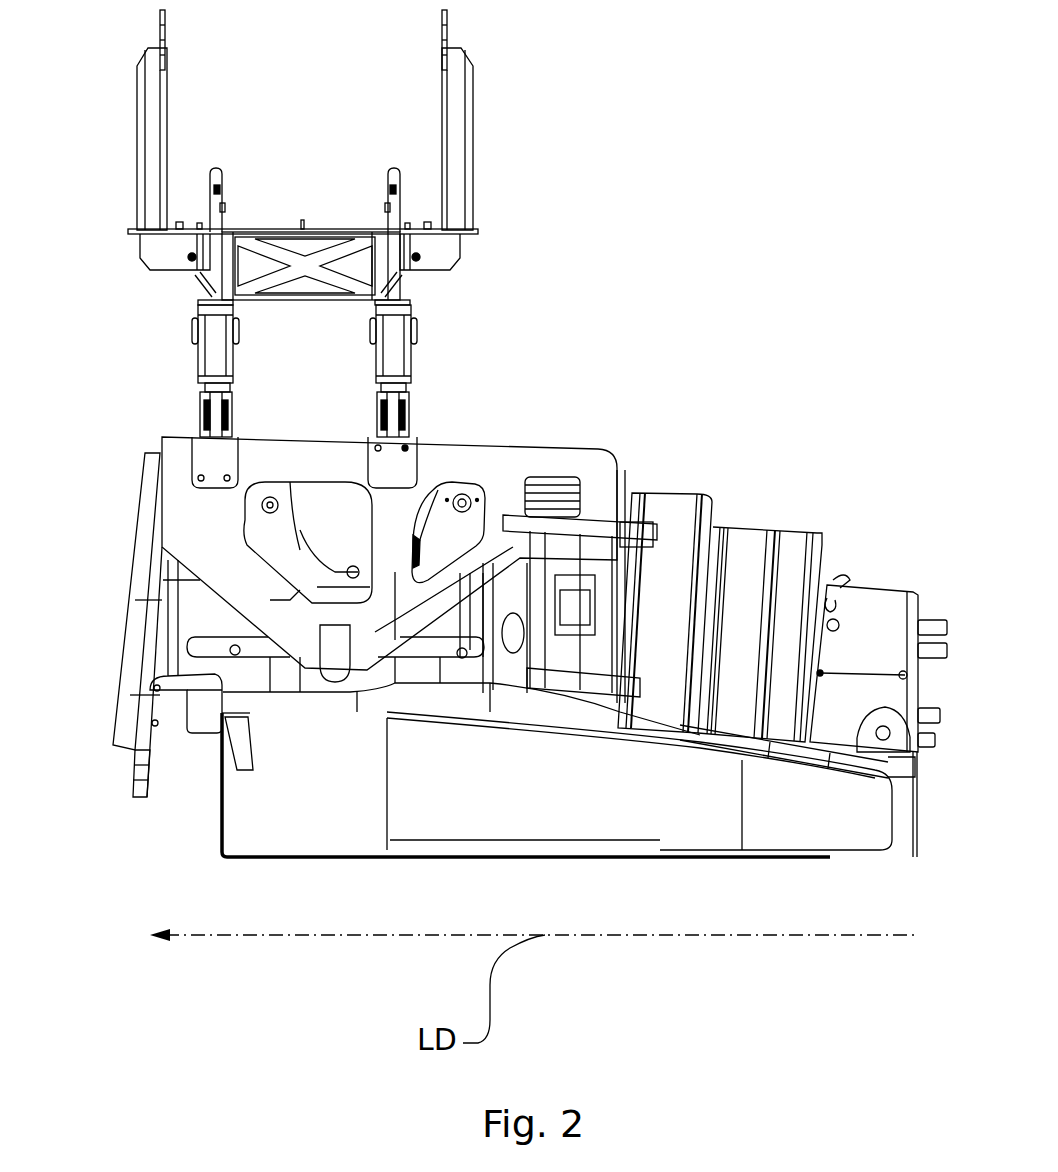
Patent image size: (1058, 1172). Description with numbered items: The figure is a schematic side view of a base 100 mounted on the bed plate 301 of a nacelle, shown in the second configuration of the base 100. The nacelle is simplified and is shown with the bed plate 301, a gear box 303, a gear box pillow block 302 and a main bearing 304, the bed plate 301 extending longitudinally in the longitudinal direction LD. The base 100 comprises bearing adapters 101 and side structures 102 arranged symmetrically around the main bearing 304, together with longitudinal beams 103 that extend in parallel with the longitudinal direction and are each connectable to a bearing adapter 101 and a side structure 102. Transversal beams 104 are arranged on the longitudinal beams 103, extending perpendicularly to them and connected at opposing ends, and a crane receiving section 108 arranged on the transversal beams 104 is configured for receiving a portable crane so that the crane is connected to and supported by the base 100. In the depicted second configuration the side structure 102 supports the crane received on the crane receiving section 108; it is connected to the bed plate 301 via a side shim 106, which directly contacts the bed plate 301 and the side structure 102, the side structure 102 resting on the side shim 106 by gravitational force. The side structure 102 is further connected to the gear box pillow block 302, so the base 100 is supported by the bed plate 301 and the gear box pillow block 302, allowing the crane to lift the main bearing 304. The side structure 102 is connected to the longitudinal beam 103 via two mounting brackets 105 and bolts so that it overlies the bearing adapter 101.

The base 100 is at (112, 318).
The bearing adapter 101 is at (263, 545).
The side structure 102 is at (183, 523).
The longitudinal beam 103 is at (347, 510).
The transversal beam 104 is at (212, 360).
The mounting bracket 105 is at (368, 462).
The side shim 106 is at (333, 690).
The crane receiving section 108 is at (582, 150).
The bed plate 301 is at (495, 717).
The gear box pillow block 302 is at (572, 690).
The gear box 303 is at (707, 449).
The main bearing 304 is at (238, 672).